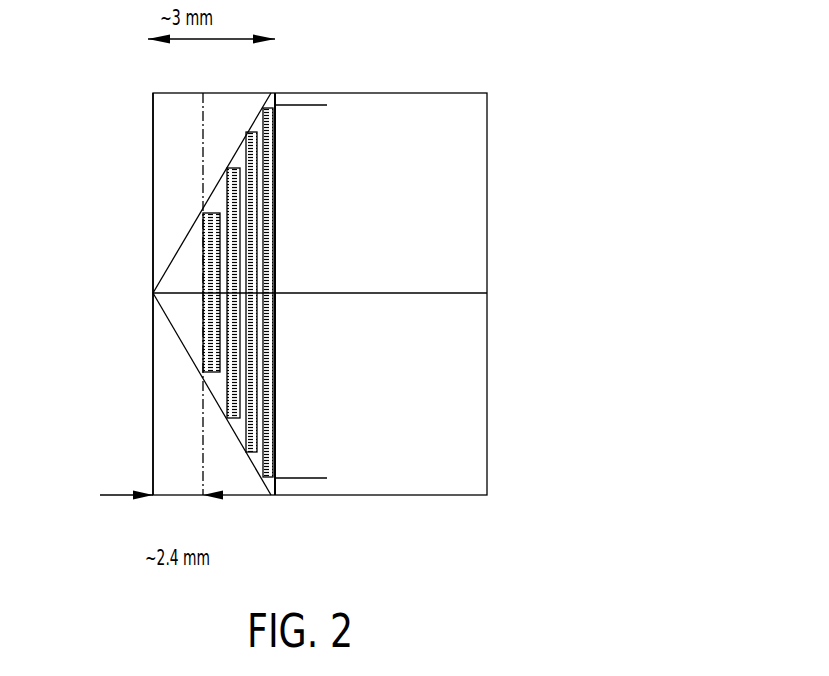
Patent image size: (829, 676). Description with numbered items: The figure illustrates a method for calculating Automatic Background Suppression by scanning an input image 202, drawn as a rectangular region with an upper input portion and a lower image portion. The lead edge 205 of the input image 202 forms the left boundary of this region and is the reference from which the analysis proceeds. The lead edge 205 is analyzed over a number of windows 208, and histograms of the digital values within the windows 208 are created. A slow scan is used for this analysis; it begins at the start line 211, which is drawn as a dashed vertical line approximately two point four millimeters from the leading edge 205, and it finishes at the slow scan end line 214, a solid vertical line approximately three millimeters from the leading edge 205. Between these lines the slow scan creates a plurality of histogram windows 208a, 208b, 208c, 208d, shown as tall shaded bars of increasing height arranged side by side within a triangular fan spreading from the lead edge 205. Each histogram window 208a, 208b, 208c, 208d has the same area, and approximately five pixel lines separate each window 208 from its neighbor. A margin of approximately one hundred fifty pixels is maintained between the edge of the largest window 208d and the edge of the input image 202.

The input image 202 is at (433, 520).
The lead edge 205 is at (153, 385).
The windows 208 is at (114, 278).
The histogram window 208a is at (207, 248).
The histogram window 208b is at (232, 195).
The histogram window 208c is at (251, 130).
The largest window 208d is at (268, 137).
The start line 211 is at (203, 445).
The slow scan end line 214 is at (276, 410).